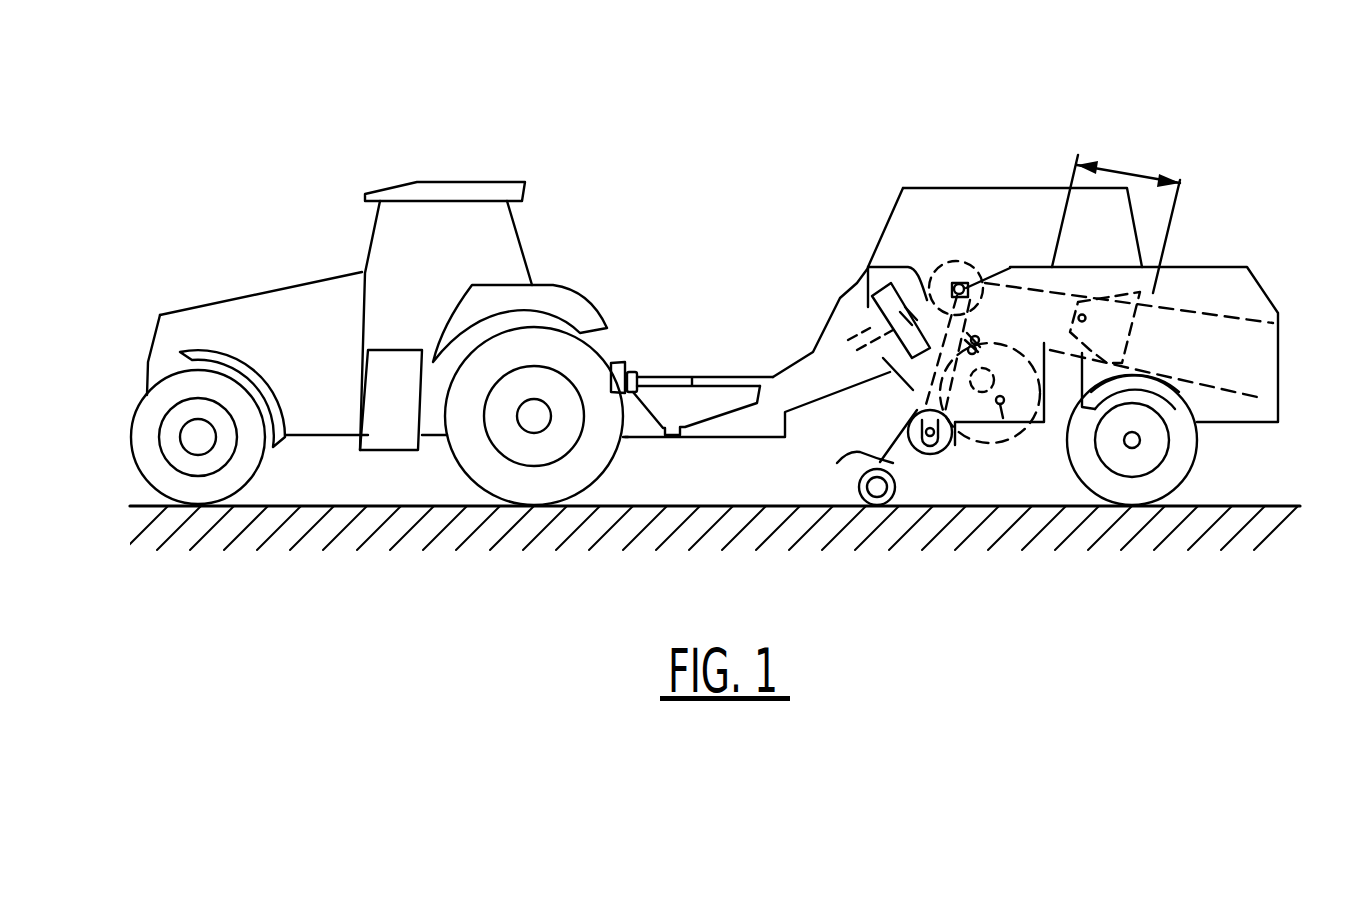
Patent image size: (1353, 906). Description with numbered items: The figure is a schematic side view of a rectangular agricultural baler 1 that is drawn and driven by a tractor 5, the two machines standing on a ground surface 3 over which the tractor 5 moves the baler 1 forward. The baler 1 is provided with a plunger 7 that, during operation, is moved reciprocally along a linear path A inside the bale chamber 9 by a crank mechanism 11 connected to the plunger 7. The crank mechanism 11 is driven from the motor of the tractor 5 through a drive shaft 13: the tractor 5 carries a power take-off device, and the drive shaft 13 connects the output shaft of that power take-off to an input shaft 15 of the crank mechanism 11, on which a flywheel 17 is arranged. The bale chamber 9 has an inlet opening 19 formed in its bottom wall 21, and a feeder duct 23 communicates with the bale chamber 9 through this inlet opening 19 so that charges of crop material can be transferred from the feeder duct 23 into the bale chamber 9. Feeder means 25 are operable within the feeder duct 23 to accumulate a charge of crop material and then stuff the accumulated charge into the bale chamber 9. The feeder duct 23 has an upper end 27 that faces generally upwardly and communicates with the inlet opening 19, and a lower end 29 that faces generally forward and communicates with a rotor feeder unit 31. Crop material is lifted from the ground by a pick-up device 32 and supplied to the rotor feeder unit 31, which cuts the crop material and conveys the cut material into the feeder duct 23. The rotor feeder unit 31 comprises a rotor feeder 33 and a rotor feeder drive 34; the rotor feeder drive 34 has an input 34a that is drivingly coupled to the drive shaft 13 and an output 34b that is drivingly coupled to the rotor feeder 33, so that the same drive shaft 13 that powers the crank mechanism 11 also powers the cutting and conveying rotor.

The rectangular agricultural baler 1 is at (1066, 135).
The ground surface 3 is at (1222, 505).
The tractor 5 is at (278, 305).
The plunger 7 is at (1115, 338).
The bale chamber 9 is at (1240, 355).
The crank mechanism 11 is at (985, 214).
The drive shaft 13 is at (712, 377).
The input shaft 15 is at (950, 279).
The flywheel 17 is at (870, 313).
The inlet opening 19 is at (1050, 297).
The bottom wall 21 is at (1182, 399).
The feeder duct 23 is at (983, 435).
The feeder means 25 is at (915, 393).
The upper end 27 is at (1006, 321).
The lower end 29 is at (960, 443).
The rotor feeder unit 31 is at (912, 508).
The pick-up device 32 is at (888, 460).
The rotor feeder 33 is at (912, 472).
The rotor feeder drive 34 is at (960, 406).
The input 34a is at (938, 262).
The output 34b is at (885, 433).
The linear path A is at (1125, 167).